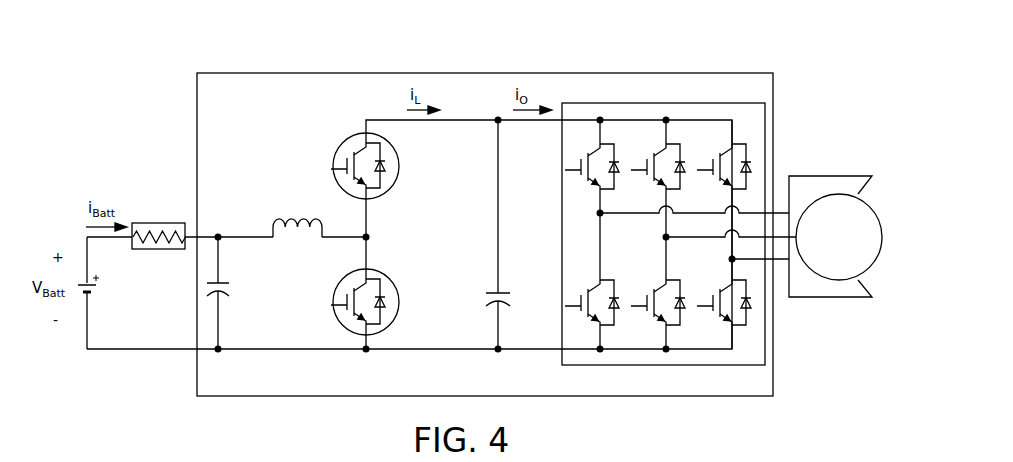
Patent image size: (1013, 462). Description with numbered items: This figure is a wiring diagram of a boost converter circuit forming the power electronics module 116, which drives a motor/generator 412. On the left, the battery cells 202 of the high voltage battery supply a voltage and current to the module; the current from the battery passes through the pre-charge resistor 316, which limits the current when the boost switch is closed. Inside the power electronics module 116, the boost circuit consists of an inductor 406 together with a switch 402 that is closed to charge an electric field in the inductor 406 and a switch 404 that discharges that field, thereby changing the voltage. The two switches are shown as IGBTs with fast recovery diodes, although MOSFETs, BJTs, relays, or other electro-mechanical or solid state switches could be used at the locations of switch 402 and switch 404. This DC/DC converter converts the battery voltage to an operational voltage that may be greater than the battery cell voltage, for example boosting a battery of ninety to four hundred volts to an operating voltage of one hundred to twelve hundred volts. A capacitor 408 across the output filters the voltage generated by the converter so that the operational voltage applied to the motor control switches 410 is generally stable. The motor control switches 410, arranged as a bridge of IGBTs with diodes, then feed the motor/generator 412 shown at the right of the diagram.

The power electronics module 116 is at (593, 72).
The battery cells 202 is at (82, 277).
The pre-charge resistor 316 is at (162, 223).
The inductor 406 is at (305, 218).
The switch 404 is at (400, 167).
The switch 402 is at (400, 302).
The capacitor 408 is at (492, 293).
The motor control switches 410 is at (667, 103).
The motor/generator 412 is at (875, 263).